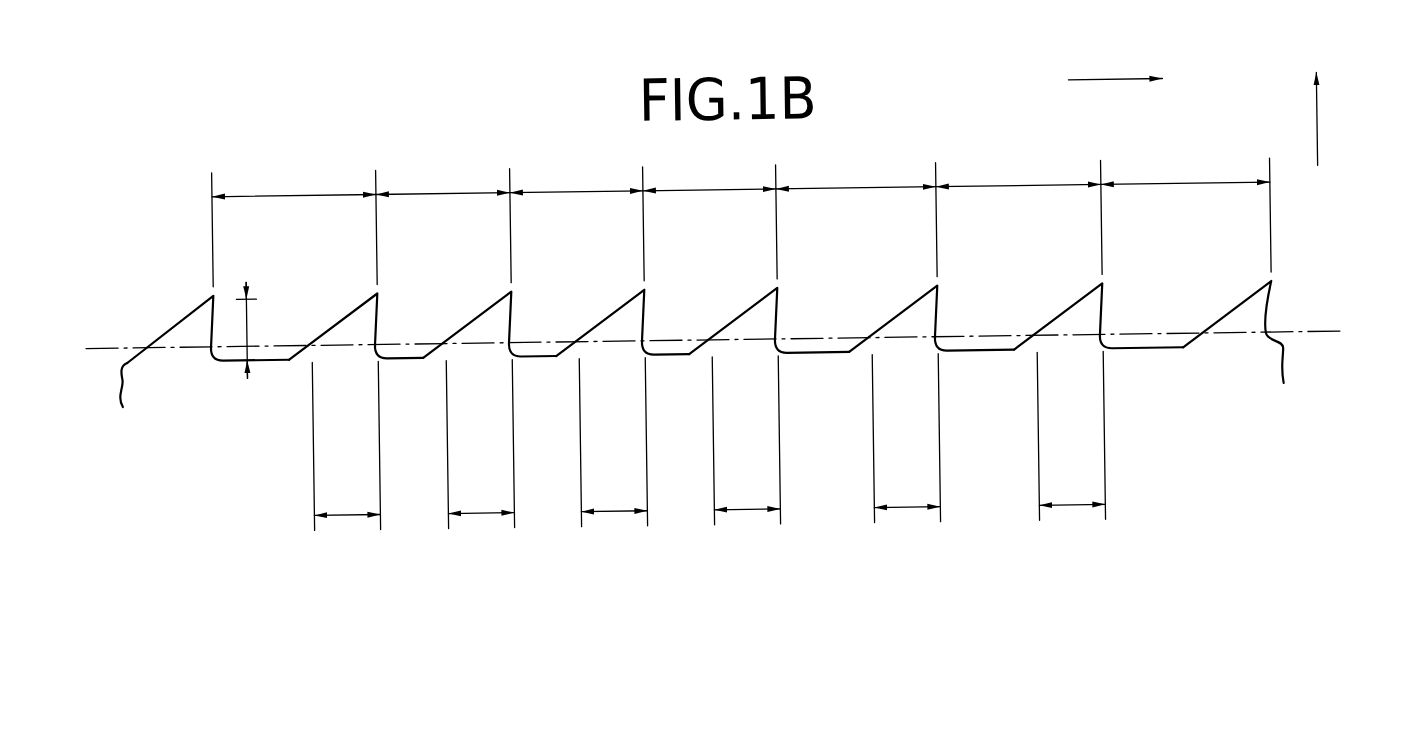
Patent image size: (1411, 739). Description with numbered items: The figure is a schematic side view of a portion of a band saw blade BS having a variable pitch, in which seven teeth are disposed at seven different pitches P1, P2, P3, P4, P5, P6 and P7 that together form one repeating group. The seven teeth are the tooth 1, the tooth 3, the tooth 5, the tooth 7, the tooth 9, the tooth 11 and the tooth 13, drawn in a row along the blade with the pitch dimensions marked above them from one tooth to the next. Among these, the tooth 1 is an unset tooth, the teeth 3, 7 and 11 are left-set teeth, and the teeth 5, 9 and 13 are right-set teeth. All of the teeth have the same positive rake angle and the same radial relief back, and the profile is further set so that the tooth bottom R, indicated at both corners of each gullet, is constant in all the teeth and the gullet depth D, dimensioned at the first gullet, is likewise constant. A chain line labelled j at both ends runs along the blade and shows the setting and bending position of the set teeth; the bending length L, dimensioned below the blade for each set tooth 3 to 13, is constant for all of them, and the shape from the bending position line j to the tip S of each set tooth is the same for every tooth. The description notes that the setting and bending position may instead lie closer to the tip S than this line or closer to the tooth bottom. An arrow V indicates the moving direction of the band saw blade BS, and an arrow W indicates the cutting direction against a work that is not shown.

The tooth 1 is at (202, 306).
The tooth 3 is at (1095, 305).
The tooth 5 is at (930, 303).
The tooth 7 is at (770, 306).
The tooth 9 is at (637, 306).
The tooth 11 is at (500, 307).
The tooth 13 is at (367, 308).
The tip S is at (215, 288).
The gullet depth D is at (249, 309).
The tooth bottom R is at (218, 349).
The bending length L is at (708, 440).
The pitch P1 is at (294, 224).
The pitch P2 is at (443, 222).
The pitch P3 is at (576, 220).
The pitch P4 is at (709, 218).
The pitch P5 is at (856, 216).
The pitch P6 is at (1018, 213).
The pitch P7 is at (1185, 211).
The arrow v V is at (1112, 83).
The arrow w W is at (1321, 139).
The band saw blade BS is at (226, 146).
The j—j line j is at (715, 333).